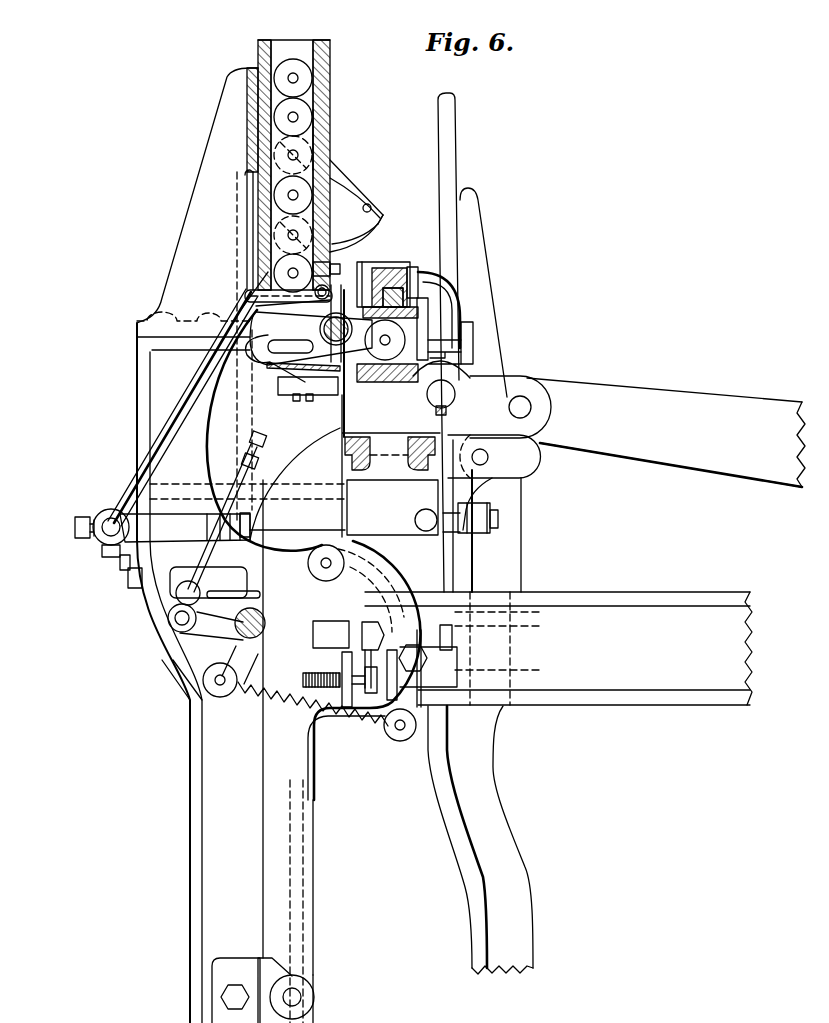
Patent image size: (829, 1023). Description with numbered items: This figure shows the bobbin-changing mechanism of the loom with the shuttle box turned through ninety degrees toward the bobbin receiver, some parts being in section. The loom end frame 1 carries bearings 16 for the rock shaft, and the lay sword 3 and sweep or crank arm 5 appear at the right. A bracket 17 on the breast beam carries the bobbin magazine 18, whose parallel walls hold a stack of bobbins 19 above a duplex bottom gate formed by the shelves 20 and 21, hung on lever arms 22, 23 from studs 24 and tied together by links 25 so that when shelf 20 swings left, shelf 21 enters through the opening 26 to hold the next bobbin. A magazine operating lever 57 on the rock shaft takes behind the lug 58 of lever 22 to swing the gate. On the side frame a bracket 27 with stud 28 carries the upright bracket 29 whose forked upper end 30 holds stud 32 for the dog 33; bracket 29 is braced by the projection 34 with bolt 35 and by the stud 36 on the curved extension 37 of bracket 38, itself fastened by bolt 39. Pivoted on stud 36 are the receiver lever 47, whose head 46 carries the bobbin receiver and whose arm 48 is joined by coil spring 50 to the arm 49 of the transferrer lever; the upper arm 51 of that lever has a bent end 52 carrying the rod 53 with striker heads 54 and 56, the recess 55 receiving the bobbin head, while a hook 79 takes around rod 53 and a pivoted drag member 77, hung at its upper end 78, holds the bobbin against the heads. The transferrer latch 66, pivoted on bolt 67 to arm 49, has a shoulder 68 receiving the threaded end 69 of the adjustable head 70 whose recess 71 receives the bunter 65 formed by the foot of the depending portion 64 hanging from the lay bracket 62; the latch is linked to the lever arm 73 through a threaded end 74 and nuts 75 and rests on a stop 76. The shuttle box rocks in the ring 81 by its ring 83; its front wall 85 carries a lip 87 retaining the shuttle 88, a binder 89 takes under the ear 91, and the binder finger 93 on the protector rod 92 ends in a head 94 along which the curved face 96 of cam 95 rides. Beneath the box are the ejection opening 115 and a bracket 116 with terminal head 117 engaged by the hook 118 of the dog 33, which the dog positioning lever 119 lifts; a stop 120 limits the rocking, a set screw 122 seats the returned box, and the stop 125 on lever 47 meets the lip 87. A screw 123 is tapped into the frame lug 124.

The end frame 1 is at (208, 840).
The lay sword 3 is at (504, 833).
The sweep or crank arm 5 is at (660, 398).
The bearing 16 is at (105, 516).
The bracket 17 is at (200, 170).
The bobbin magazine 18 is at (258, 46).
The bobbin 19 is at (293, 66).
The gate or shelf 20 is at (252, 300).
The gate or shelf 21 is at (370, 242).
The lever arm 22 is at (250, 284).
The lever arm 23 is at (343, 180).
The stud 24 is at (320, 138).
The link 25 is at (368, 203).
The opening 26 is at (348, 260).
The bracket 27 is at (220, 999).
The stud 28 is at (316, 997).
The upright bracket 29 is at (322, 853).
The fork 30 is at (262, 481).
The stud 32 is at (492, 457).
The dog 33 is at (378, 433).
The projection 34 is at (170, 611).
The bolt 35 is at (176, 595).
The stud 36 is at (350, 546).
The curved upper extension 37 is at (392, 552).
The bracket 38 is at (458, 656).
The bolt 39 is at (428, 660).
The head or upper end 46 is at (292, 393).
The lever 47 is at (335, 433).
The downwardly extending arm 48 is at (400, 744).
The downwardly extending arm 49 is at (222, 662).
The coil spring 50 is at (286, 704).
The upper arm 51 is at (222, 420).
The bent upper end 52 is at (310, 342).
The transversely extending rod 53 is at (320, 330).
The striker head 54 is at (368, 385).
The recess 55 is at (388, 386).
The striker head 56 is at (418, 280).
The magazine operating lever 57 is at (196, 382).
The lug or ear 58 is at (248, 212).
The bracket 62 is at (377, 475).
The depending portion 64 is at (465, 572).
The foot or bunter 65 is at (453, 640).
The transferrer latch 66 is at (310, 646).
The bolt 67 is at (232, 641).
The shoulder 68 is at (309, 588).
The threaded end 69 is at (310, 627).
The adjustable latch head 70 is at (383, 630).
The recess 71 is at (396, 668).
The lever arm 73 is at (193, 532).
The threaded end 74 is at (250, 440).
The nuts 75 is at (249, 461).
The stop 76 is at (345, 665).
The member 77 is at (330, 291).
The upper end 78 is at (343, 276).
The hook 79 is at (243, 372).
The ring or annulus 81 is at (458, 285).
The ring or annulus 83 is at (463, 298).
The front wall 85 is at (420, 384).
The lip 87 is at (340, 374).
The shuttle 88 is at (441, 409).
The binder 89 is at (396, 280).
The ear 91 is at (386, 266).
The protector rod 92 is at (428, 531).
The binder finger 93 is at (488, 487).
The head 94 is at (474, 325).
The cam 95 is at (463, 310).
The curved outer face 96 is at (466, 305).
The opening 115 is at (475, 338).
The bracket 116 is at (475, 350).
The terminal head 117 is at (475, 362).
The hook 118 is at (406, 440).
The dog positioning lever 119 is at (177, 492).
The stop 120 is at (343, 420).
The set screw 122 is at (500, 392).
The screw 123 is at (303, 681).
The lug or ear 124 is at (352, 722).
The stop 125 is at (306, 401).